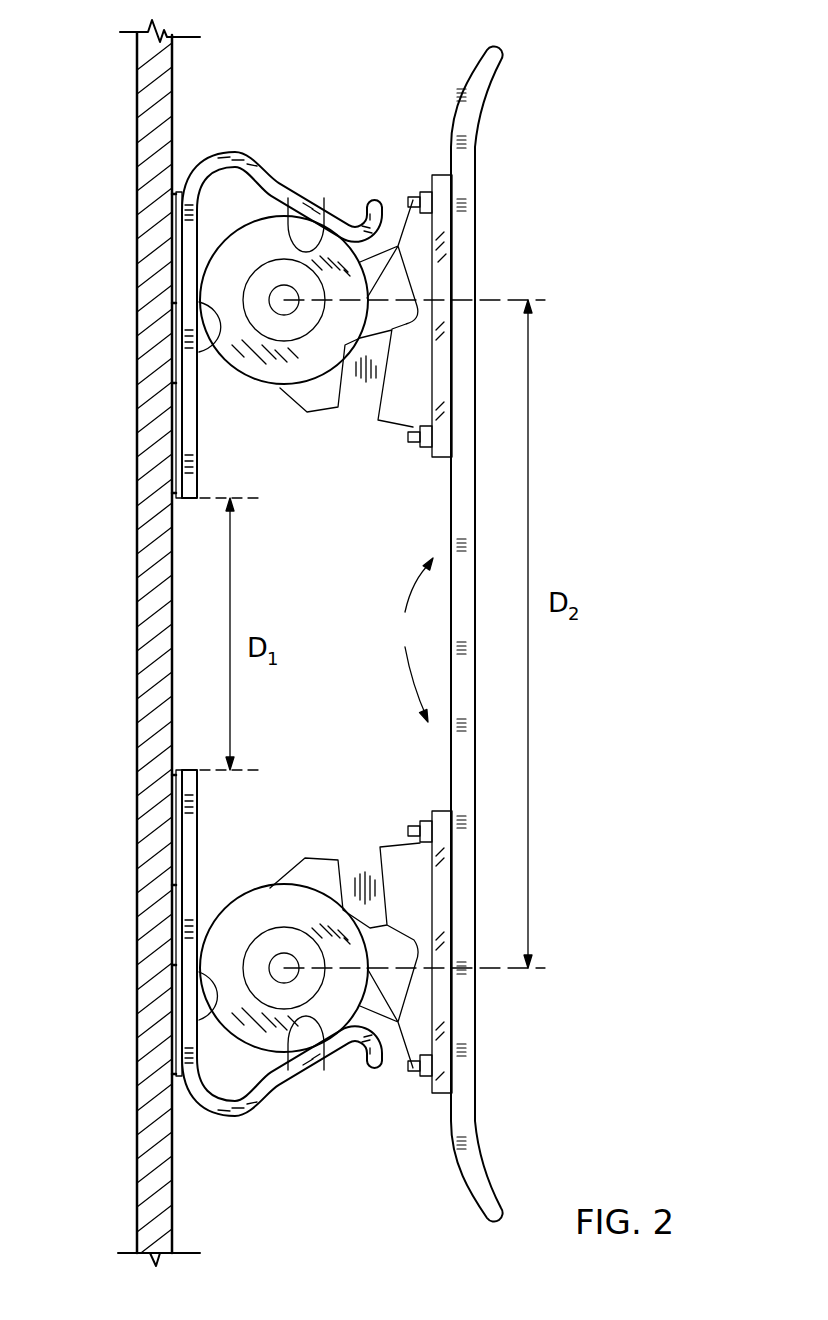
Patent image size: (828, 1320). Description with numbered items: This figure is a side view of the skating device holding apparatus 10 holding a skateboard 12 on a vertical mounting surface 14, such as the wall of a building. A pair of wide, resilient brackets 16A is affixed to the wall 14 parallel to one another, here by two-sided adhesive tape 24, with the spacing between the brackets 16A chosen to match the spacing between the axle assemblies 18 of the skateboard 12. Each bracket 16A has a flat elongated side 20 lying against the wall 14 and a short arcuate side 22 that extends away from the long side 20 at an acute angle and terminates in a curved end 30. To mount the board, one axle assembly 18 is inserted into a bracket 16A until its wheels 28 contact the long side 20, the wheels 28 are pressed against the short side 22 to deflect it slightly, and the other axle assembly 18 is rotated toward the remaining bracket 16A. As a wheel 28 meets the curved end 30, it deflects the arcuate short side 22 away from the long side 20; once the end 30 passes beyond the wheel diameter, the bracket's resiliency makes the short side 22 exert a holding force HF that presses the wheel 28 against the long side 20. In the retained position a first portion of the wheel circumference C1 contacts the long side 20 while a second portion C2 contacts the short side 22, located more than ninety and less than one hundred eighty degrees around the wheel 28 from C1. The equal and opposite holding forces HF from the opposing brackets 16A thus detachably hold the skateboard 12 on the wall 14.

The skating device holding apparatus 10 is at (410, 640).
The skateboard 12 is at (477, 207).
The mounting surface 14 is at (137, 650).
The resilient brackets 16A is at (213, 150).
The axle assemblies 18 is at (367, 397).
The flat elongated sides 20 is at (176, 265).
The short arcuate sides 22 is at (284, 200).
The two-sided adhesive tape 24 is at (173, 195).
The wheels 28 is at (257, 367).
The curved ends 30 is at (380, 200).
The first portion of the wheel's circumference C1 is at (210, 1000).
The second portion of the wheel's circumference C2 is at (326, 1130).
The holding force HF is at (365, 1102).